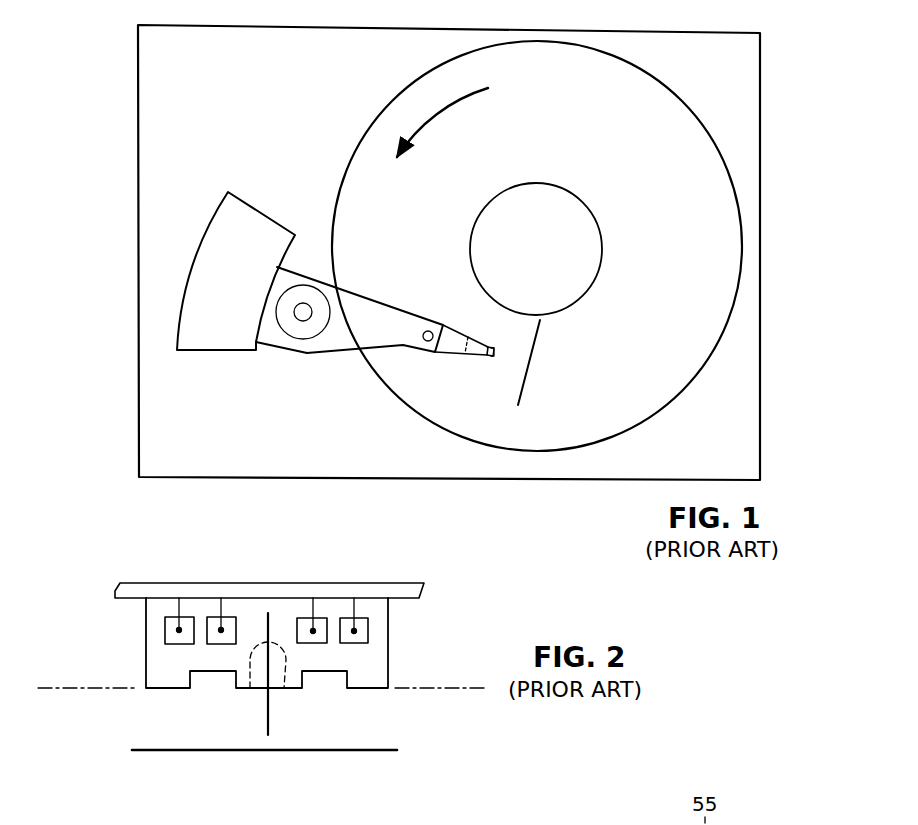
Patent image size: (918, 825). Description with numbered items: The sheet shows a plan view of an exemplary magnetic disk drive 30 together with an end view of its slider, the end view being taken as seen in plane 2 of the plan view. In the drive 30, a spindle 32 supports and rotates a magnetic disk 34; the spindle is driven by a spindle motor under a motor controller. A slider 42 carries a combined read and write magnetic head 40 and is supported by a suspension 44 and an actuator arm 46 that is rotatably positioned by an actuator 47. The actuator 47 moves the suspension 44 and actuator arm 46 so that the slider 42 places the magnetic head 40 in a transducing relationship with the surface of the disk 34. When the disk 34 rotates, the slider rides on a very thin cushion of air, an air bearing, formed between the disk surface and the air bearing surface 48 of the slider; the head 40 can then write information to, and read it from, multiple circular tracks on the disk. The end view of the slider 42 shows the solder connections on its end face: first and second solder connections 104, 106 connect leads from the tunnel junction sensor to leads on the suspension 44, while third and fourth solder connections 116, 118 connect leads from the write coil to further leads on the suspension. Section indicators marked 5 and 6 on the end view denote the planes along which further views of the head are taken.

In FIG. 1, the magnetic disk drive 30 is at (778, 72).
In FIG. 1, the spindle 32 is at (573, 189).
In FIG. 1, the magnetic disk 34 is at (683, 269).
In FIG. 1, the magnetic head 40 is at (493, 357).
In FIG. 2, the magnetic head 40 is at (253, 700).
In FIG. 1, the slider 42 is at (493, 345).
In FIG. 2, the slider 42 is at (145, 629).
In FIG. 1, the suspension 44 is at (452, 356).
In FIG. 1, the actuator arm 46 is at (392, 313).
In FIG. 1, the actuator 47 is at (268, 221).
In FIG. 2, the air bearing surface (ABS) 48 is at (63, 690).
In FIG. 2, the first solder connection 104 is at (163, 618).
In FIG. 2, the second solder connection 106 is at (342, 618).
In FIG. 2, the third solder connection 116 is at (208, 618).
In FIG. 2, the fourth solder connection 118 is at (300, 618).
In FIG. 1, the plane 2— 2 is at (546, 331).
In FIG. 2, the view direction 5- 5 is at (153, 758).
In FIG. 2, the section line 6- 6 is at (276, 623).